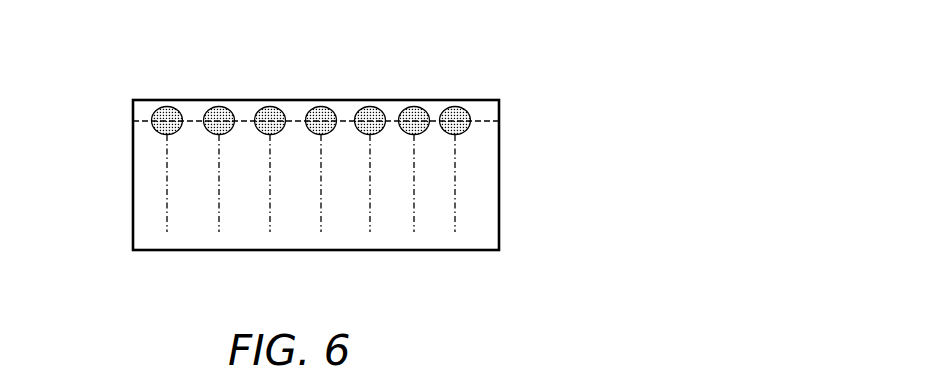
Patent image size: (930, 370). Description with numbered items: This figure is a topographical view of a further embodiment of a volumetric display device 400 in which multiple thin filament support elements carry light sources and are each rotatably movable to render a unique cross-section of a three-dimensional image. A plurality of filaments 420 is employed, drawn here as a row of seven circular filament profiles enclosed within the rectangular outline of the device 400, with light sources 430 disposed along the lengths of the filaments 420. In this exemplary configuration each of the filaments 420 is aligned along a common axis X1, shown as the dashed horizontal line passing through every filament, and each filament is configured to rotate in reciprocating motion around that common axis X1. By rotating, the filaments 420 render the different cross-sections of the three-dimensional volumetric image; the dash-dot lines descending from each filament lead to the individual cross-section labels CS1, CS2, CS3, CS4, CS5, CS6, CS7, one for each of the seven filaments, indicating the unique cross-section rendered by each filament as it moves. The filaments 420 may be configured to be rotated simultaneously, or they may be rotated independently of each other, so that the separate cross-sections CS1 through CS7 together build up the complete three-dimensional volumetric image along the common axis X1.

The sensor module 400 is at (513, 185).
The filaments 420 is at (325, 117).
The light sources 430 is at (165, 110).
The common axis X1 is at (133, 121).
The column section 1 CS1 is at (167, 190).
The column section 2 CS2 is at (219, 190).
The column section 3 CS3 is at (270, 190).
The column section 4 CS4 is at (321, 190).
The column section 5 CS5 is at (370, 190).
The column section 6 CS6 is at (414, 190).
The column section 7 CS7 is at (455, 190).